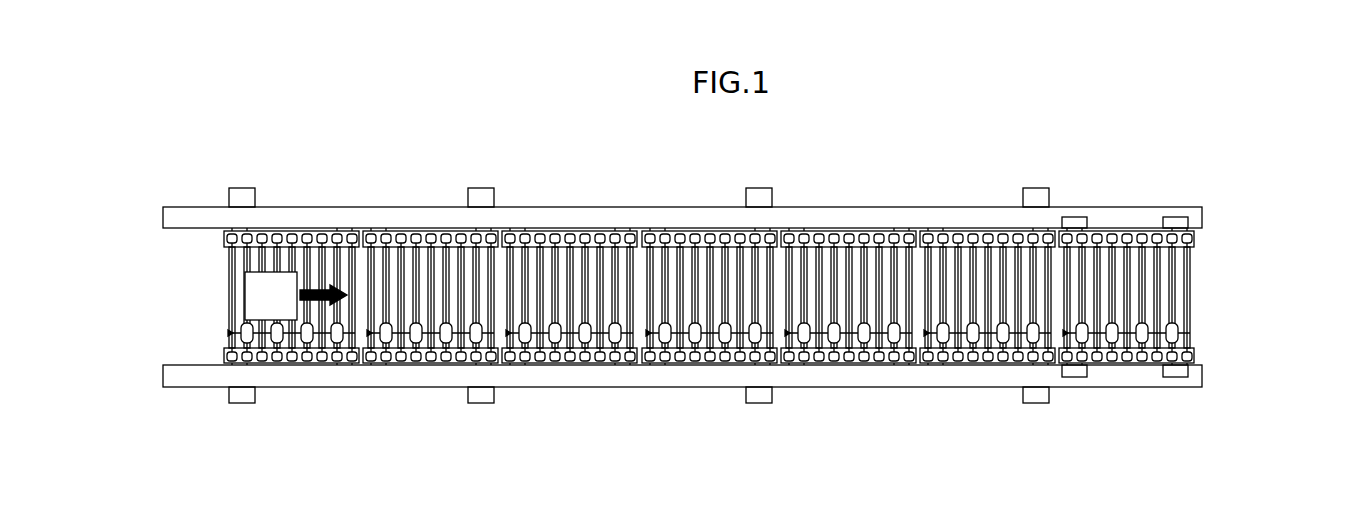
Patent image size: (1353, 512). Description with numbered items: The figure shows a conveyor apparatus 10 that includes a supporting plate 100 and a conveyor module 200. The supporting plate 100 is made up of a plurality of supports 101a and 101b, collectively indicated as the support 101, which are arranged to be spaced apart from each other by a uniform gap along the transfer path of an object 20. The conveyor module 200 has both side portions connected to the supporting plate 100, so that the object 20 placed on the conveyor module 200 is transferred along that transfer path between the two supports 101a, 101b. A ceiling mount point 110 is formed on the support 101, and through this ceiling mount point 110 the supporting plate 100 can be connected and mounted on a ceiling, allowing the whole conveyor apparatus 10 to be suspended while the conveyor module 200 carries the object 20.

The conveyor apparatus 10 is at (193, 132).
The supporting plate 100 is at (1088, 170).
The support 101 is at (1278, 208).
The support 101a is at (1201, 221).
The support 101b is at (1201, 377).
The ceiling mount point 110 is at (243, 189).
The conveyor module 200 is at (206, 287).
The object 20 is at (273, 270).